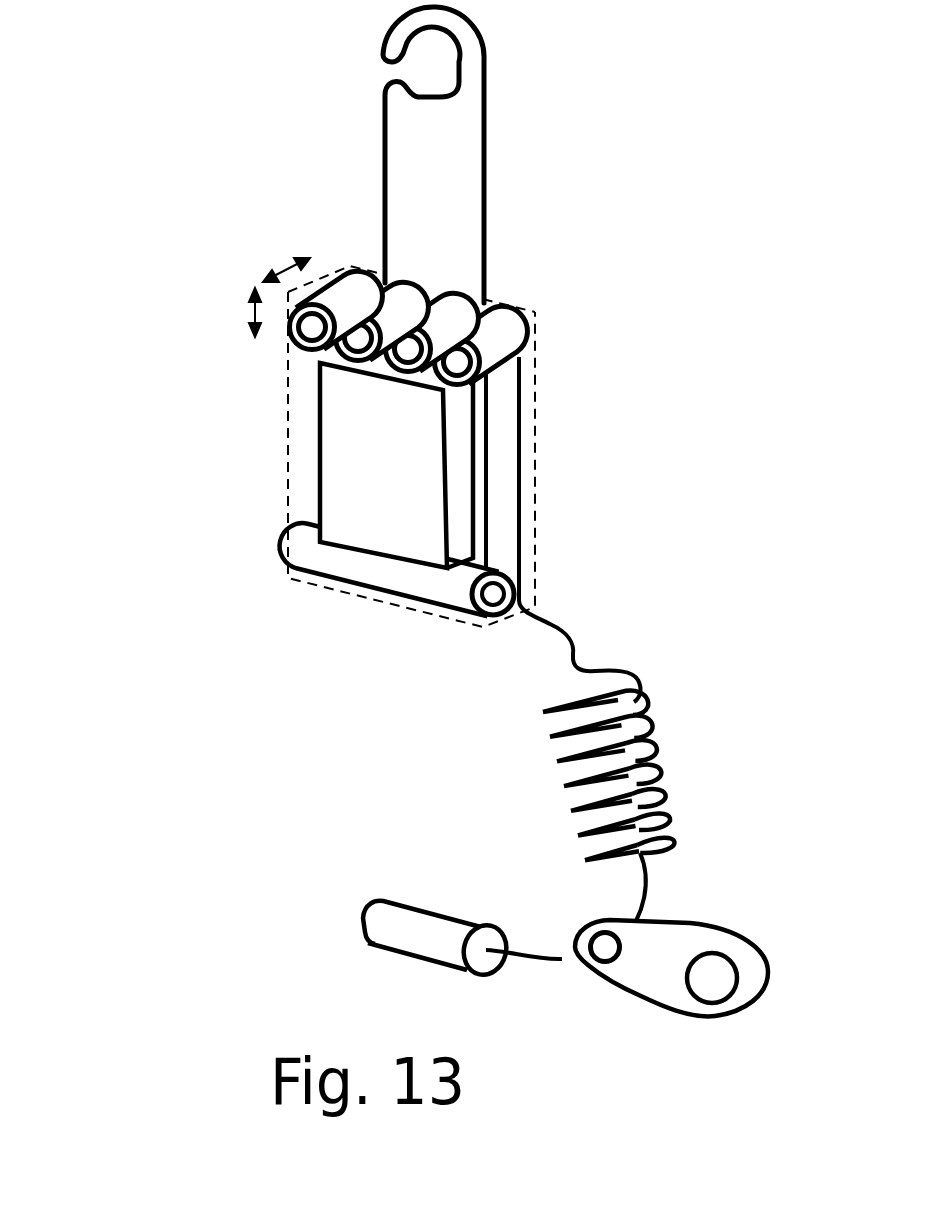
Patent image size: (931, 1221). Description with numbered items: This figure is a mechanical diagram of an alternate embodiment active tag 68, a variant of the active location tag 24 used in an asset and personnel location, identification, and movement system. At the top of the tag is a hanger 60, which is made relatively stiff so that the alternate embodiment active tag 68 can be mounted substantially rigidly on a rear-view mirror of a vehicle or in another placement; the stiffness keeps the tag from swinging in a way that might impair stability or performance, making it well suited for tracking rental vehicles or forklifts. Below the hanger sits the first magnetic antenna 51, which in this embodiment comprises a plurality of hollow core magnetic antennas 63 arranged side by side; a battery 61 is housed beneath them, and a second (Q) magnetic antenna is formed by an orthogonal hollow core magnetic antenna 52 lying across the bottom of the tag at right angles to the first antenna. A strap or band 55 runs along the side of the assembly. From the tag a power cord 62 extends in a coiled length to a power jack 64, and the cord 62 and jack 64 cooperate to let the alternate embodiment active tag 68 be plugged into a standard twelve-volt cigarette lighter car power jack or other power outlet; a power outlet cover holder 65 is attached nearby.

The active location tag 24 is at (270, 588).
The first magnetic antenna 51 is at (444, 299).
The orthogonal hollow core magnetic antenna 52 is at (290, 543).
The lift position sensor 55 is at (510, 473).
The hanger 60 is at (435, 158).
The battery 61 is at (382, 425).
The power cord 62 is at (573, 633).
The hollow core magnetic antennas 63 is at (516, 345).
The power jack 64 is at (447, 912).
The power outlet cover holder 65 is at (708, 955).
The alternate embodiment active tag 68 is at (205, 825).